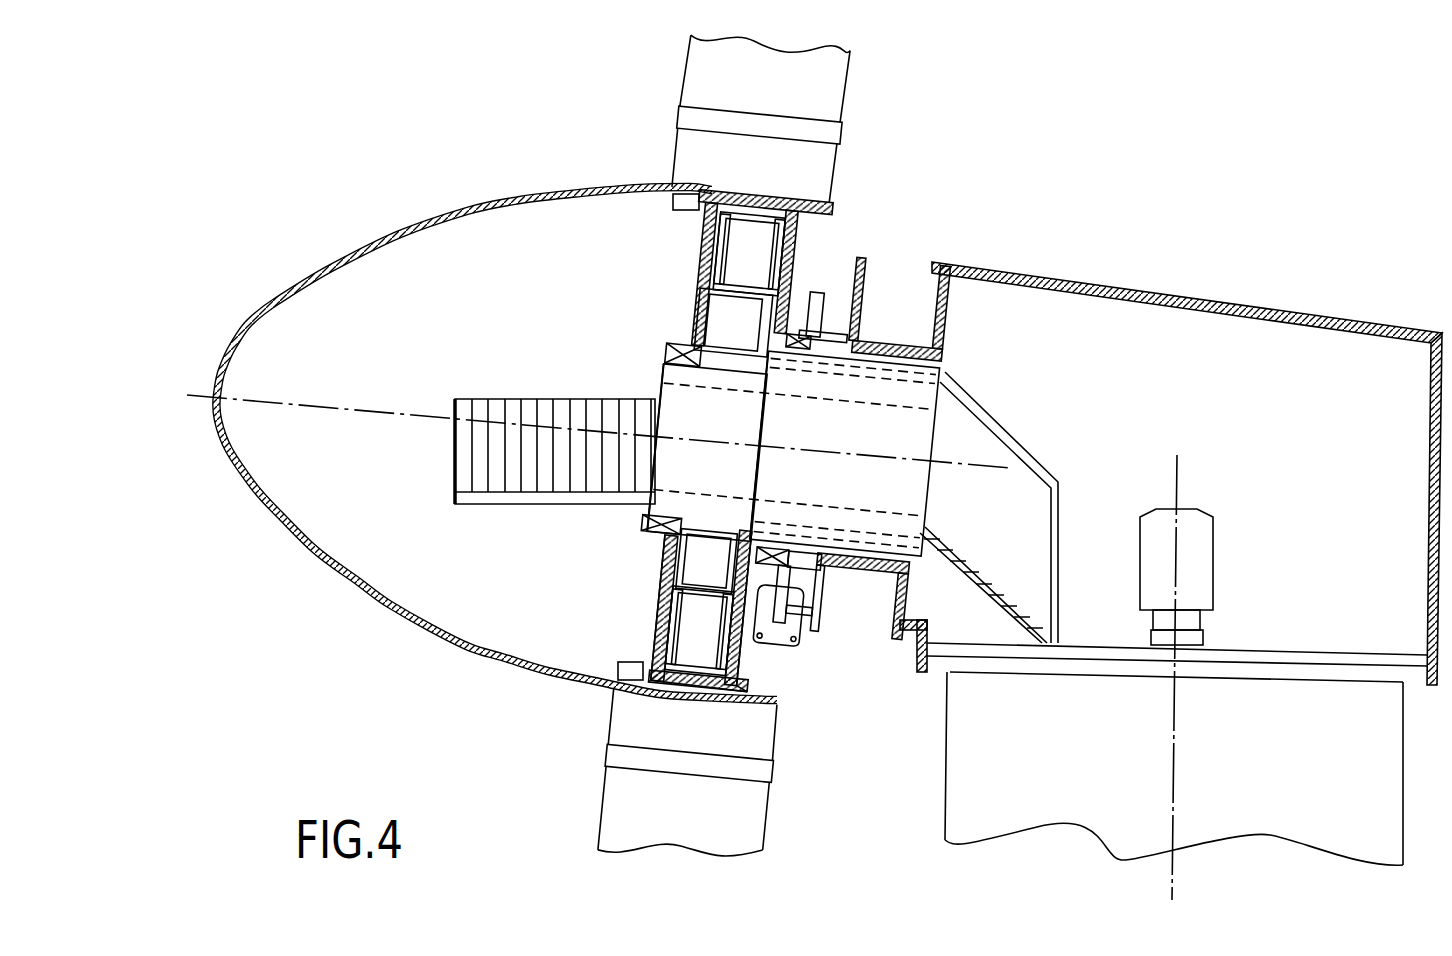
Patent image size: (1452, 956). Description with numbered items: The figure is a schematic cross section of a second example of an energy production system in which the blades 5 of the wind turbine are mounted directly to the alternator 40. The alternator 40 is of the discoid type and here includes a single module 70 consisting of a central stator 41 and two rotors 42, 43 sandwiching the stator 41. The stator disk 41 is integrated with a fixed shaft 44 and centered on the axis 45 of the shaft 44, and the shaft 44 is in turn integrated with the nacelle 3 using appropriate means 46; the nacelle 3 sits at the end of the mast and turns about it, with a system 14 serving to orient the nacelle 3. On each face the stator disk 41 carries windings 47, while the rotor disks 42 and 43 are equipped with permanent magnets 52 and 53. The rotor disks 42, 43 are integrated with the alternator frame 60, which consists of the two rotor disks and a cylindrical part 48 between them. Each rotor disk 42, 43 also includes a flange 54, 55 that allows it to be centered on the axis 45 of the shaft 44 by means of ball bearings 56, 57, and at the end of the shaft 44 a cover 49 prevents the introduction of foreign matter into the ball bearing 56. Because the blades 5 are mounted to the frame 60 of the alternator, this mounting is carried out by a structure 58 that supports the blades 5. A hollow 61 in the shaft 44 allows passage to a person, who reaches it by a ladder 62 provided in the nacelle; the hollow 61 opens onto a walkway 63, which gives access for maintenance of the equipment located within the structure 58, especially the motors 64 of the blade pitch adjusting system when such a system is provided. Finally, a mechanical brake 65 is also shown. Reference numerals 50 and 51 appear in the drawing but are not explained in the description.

The nacelle 3 is at (1360, 322).
The blades 5 is at (820, 83).
The system for orienting the nacelle 14 is at (1205, 560).
The alternator 40 is at (647, 575).
The central stator 41 is at (753, 260).
The rotor 42 is at (707, 260).
The rotor 43 is at (807, 230).
The fixed shaft 44 is at (912, 390).
The axis 45 is at (977, 467).
The appropriate means 46 is at (933, 300).
The windings 47 is at (787, 280).
The cylindrical part 48 is at (698, 700).
The cover 49 is at (660, 380).
The lower bearing 50 is at (687, 530).
The hub face 51 is at (757, 368).
The permanent magnets 52 is at (657, 630).
The permanent magnets 53 is at (750, 657).
The flange 54 is at (682, 343).
The flange 55 is at (817, 548).
The ball bearing 56 is at (642, 522).
The ball bearing 57 is at (772, 545).
The structure 58 is at (400, 620).
The alternator frame 60 is at (730, 187).
The hollow 61 is at (898, 437).
The ladder 62 is at (1015, 597).
The walkway 63 is at (483, 485).
The motors 64 is at (675, 205).
The mechanical brake 65 is at (790, 640).
The module 70 is at (728, 373).